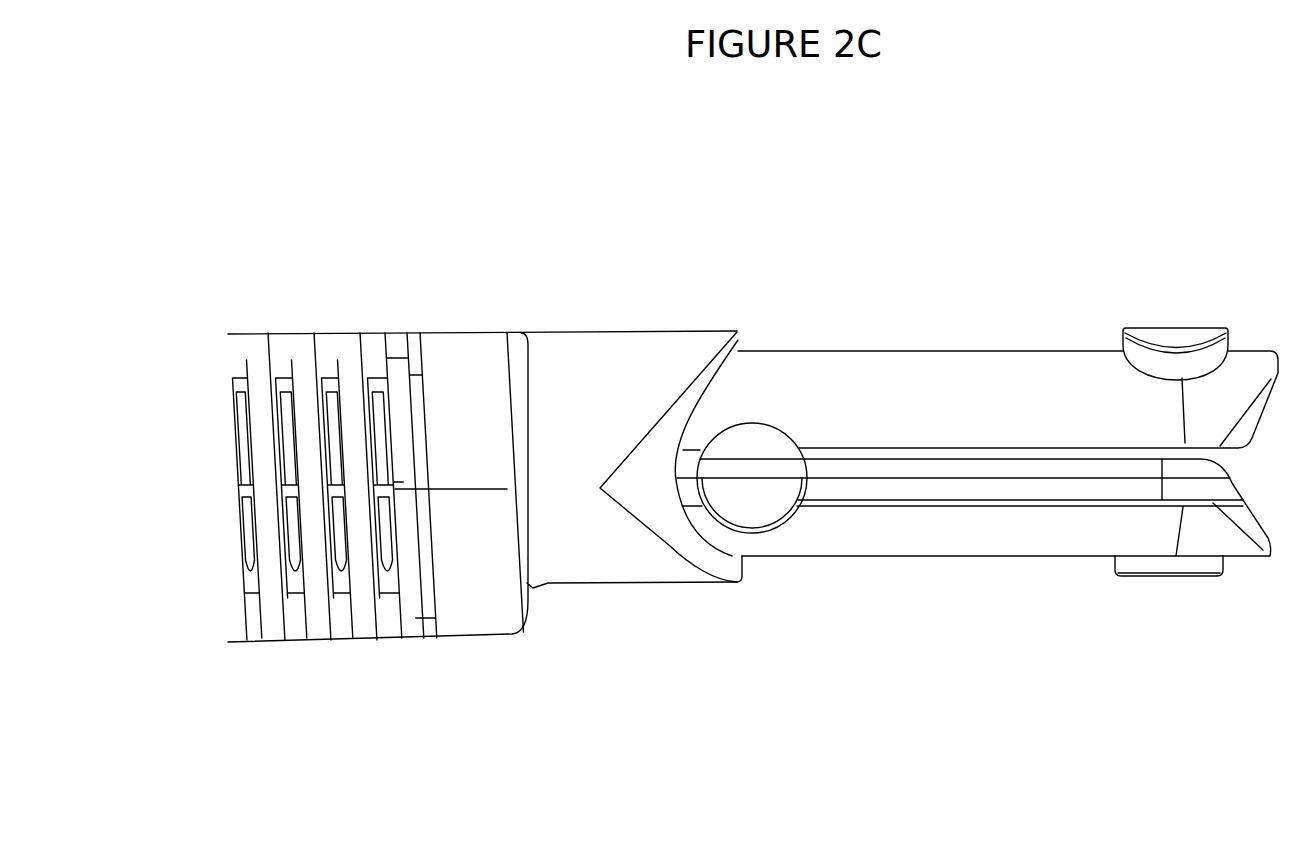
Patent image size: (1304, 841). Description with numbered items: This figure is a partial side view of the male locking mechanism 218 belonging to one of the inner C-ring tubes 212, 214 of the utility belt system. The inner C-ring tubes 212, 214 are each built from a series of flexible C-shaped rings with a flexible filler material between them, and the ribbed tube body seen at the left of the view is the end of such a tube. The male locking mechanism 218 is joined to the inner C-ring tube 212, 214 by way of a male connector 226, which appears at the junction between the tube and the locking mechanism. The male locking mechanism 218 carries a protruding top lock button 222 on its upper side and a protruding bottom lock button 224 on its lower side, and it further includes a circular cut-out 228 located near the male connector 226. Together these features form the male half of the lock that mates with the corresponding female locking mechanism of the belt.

The inner C-ring tube 212 is at (482, 401).
The inner C-ring tube 214 is at (330, 323).
The male locking mechanism 218 is at (950, 527).
The protruding top lock button 222 is at (1178, 328).
The protruding bottom lock button 224 is at (1163, 578).
The male connector 226 is at (665, 513).
The circular cut-out 228 is at (752, 490).